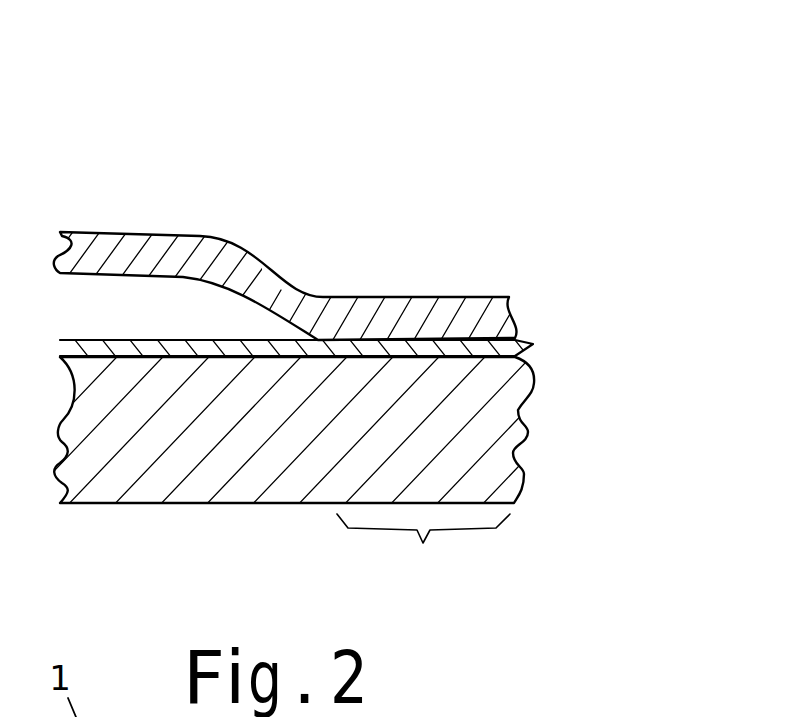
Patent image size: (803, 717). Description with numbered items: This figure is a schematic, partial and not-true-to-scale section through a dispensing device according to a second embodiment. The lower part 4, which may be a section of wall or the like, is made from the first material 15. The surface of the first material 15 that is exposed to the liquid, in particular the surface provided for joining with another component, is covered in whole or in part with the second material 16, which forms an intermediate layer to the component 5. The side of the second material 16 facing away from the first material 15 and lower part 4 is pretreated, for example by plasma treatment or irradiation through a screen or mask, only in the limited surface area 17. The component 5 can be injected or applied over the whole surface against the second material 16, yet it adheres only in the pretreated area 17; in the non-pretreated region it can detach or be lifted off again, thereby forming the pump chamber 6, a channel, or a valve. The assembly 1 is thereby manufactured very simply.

The plate assembly 1 is at (275, 181).
The lower part 4 is at (342, 467).
The component 5 is at (222, 237).
The pump chamber 6 is at (130, 305).
The first material 15 is at (255, 484).
The second material 16 is at (525, 346).
The pretreated area 17 is at (423, 550).